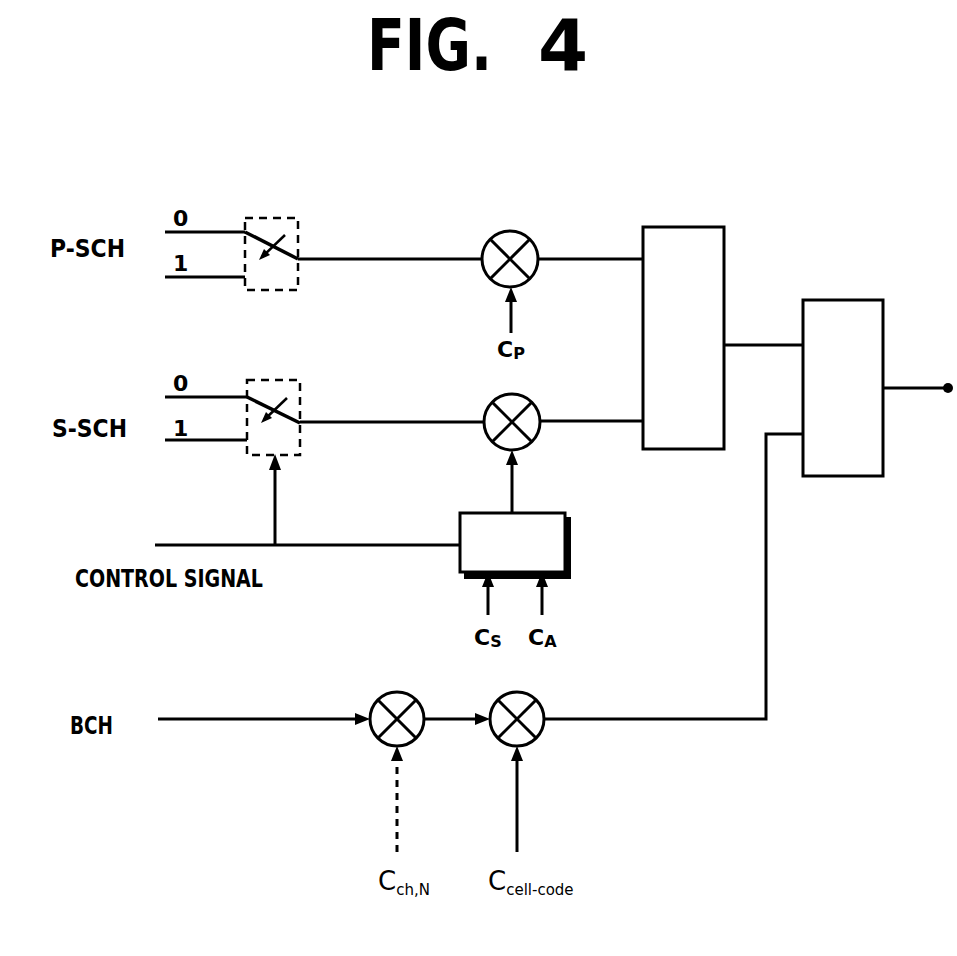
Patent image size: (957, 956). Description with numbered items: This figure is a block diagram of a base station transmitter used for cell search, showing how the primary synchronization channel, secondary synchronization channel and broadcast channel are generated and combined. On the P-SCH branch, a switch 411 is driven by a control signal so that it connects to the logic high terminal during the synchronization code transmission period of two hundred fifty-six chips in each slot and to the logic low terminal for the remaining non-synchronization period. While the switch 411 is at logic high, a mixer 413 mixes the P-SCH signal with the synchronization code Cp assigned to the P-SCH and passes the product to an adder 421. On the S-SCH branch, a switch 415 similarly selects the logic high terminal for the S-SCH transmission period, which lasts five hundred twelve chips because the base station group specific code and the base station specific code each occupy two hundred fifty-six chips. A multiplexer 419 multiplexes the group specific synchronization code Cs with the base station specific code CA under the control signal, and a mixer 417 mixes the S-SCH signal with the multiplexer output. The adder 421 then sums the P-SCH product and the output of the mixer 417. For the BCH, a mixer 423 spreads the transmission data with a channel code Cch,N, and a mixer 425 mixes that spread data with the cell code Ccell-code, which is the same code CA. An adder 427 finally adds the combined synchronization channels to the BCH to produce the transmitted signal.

The switch 411 is at (275, 216).
The mixer 413 is at (529, 240).
The switch 415 is at (275, 379).
The mixer 417 is at (530, 404).
The multiplexer (MUX) 419 is at (572, 541).
The adder 421 is at (681, 226).
The mixer 423 is at (415, 702).
The mixer 425 is at (535, 702).
The adder 427 is at (841, 299).